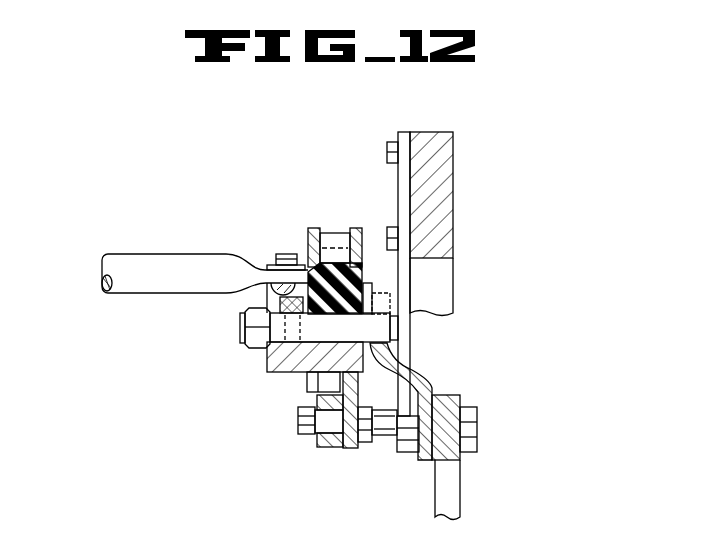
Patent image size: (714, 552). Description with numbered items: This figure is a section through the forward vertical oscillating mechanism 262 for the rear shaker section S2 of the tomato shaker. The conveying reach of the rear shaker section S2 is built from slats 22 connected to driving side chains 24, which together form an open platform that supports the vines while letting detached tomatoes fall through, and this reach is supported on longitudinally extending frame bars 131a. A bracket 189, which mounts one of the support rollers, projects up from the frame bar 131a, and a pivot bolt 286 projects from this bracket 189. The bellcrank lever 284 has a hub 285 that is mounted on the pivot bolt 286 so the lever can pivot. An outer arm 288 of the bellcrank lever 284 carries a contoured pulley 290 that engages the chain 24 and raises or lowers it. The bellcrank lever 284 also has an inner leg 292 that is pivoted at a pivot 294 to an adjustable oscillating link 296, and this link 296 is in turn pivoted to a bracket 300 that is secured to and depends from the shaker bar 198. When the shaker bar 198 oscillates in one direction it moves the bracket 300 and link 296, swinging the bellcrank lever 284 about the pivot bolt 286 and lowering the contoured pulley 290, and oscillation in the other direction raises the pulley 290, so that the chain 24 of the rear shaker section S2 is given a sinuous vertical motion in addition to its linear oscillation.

The rear shaker section S2 is at (96, 189).
The forward vertical oscillating mechanism 262 is at (279, 164).
The slats 22 is at (130, 262).
The side chains 24 is at (332, 232).
The contoured pulley 290 is at (365, 292).
The outer arm 288 is at (250, 310).
The pivot bolt 286 is at (243, 327).
The hub 285 is at (275, 360).
The inner leg 292 is at (308, 386).
The bellcrank lever 284 is at (352, 455).
The pivot 294 is at (298, 424).
The adjustable oscillating link 296 is at (326, 446).
The bracket 300 is at (405, 343).
The shaker bar 198 is at (447, 165).
The bracket 189 is at (428, 387).
The longitudinal frame bars 131a is at (460, 400).